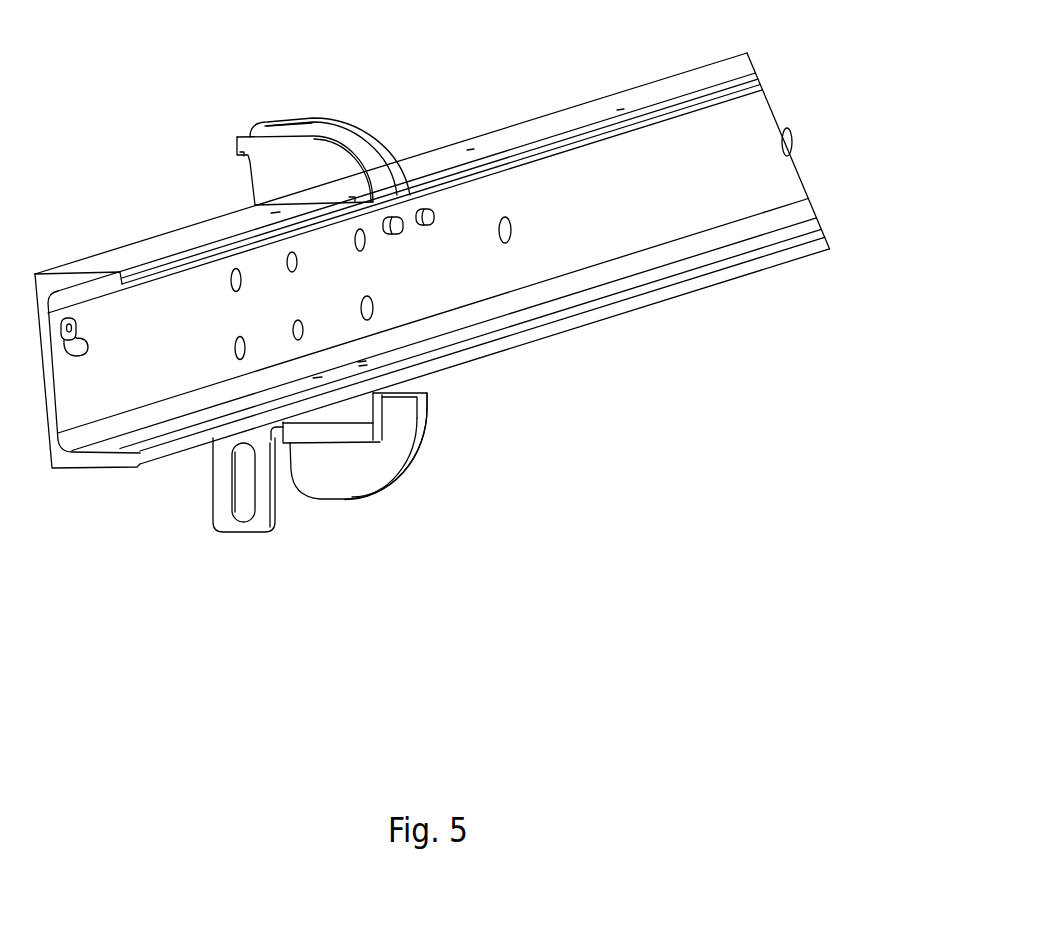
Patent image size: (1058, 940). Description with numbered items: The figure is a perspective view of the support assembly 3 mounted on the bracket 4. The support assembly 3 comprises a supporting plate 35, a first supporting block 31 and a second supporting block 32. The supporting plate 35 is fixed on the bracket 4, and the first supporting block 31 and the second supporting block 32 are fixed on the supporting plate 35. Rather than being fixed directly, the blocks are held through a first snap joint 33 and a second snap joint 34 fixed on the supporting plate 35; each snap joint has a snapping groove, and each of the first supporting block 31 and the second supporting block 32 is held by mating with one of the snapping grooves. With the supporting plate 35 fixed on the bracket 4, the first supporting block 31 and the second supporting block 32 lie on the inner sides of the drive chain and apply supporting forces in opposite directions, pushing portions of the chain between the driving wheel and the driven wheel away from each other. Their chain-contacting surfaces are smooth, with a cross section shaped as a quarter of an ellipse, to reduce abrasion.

The support assembly 3 is at (377, 502).
The bracket 4 is at (562, 122).
The first supporting block 31 is at (265, 128).
The second supporting block 32 is at (400, 429).
The first snap joint 33 is at (278, 177).
The second snap joint 34 is at (342, 423).
The supporting plate 35 is at (225, 513).